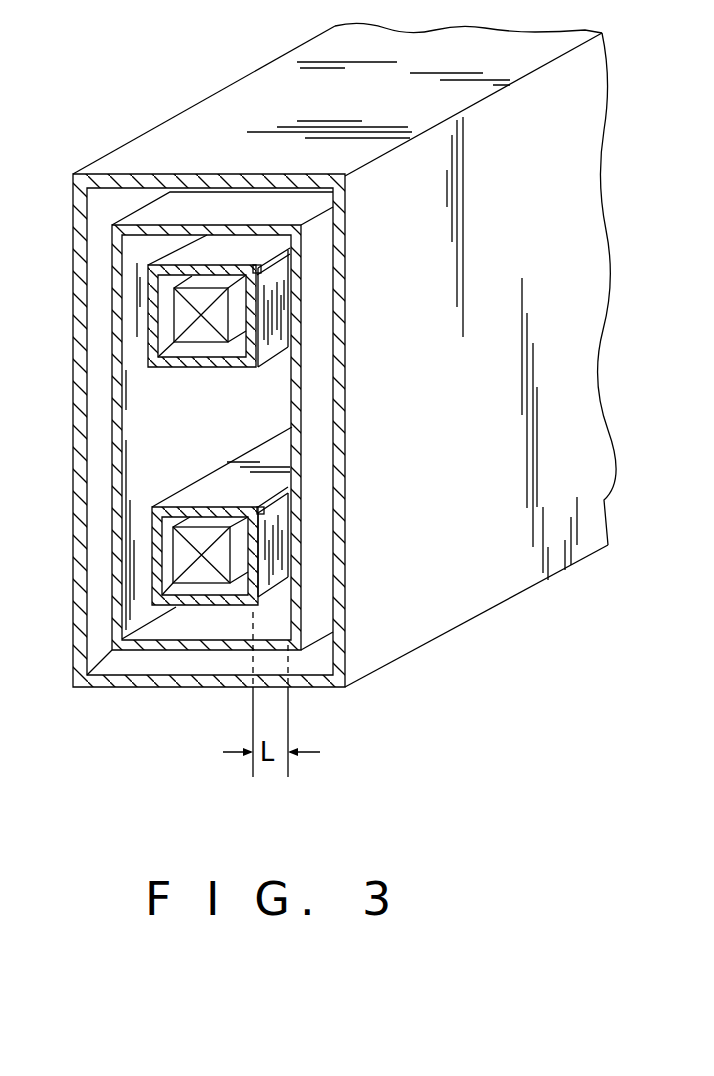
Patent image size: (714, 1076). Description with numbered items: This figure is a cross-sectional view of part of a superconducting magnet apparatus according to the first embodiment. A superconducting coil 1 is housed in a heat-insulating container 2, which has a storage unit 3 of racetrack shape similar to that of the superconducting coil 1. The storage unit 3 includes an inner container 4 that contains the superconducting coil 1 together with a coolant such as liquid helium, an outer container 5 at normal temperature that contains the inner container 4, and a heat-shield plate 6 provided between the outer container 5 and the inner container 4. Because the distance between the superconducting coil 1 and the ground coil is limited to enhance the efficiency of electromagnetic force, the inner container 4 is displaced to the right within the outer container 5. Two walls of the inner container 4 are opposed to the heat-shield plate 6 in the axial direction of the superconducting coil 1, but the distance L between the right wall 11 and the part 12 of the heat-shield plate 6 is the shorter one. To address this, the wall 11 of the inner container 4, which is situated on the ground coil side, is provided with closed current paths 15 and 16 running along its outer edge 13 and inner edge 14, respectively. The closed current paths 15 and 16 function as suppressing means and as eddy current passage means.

The superconducting coil 1 is at (178, 563).
The heat-insulating container 2 is at (273, 90).
The storage unit 3 is at (197, 594).
The inner container 4 is at (153, 512).
The outer container 5 is at (80, 284).
The heat-shield plate 6 is at (112, 326).
The right wall 11 is at (288, 565).
The part of the heat shield plate 12 is at (315, 515).
The outer edge 13 is at (256, 266).
The inner edge 14 is at (253, 368).
The closed current path 15 is at (278, 266).
The closed current path 16 is at (302, 330).